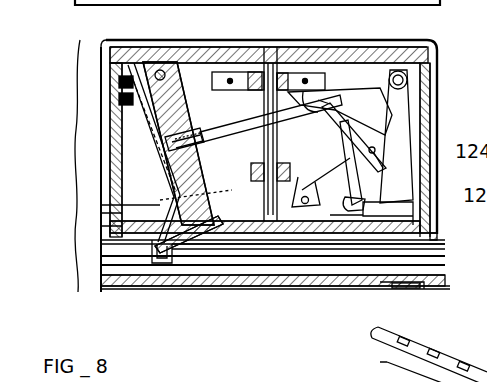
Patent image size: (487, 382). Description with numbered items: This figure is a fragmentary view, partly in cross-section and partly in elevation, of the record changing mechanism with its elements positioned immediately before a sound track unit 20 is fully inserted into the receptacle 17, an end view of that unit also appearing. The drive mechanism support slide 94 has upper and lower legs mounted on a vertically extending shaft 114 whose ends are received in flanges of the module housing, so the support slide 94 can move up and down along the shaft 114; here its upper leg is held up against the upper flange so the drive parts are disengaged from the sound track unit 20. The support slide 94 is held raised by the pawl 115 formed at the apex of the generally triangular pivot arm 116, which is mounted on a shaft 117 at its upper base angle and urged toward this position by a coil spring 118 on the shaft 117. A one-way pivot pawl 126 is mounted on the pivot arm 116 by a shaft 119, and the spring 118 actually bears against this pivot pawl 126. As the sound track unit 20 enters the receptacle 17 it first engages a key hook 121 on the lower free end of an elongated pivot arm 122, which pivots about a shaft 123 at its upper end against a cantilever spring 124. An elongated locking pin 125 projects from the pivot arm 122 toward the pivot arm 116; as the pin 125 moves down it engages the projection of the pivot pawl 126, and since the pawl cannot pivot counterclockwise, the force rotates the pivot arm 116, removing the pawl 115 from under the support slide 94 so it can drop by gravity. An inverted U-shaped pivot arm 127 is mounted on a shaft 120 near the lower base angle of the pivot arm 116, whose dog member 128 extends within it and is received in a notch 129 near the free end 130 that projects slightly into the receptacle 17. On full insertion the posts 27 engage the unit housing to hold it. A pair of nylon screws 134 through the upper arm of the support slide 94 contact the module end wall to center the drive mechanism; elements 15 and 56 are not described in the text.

The base plate 15 is at (207, 258).
The receptacle 17 is at (112, 247).
The sound track unit 20 is at (197, 257).
The posts 27 is at (410, 287).
The channel rail 56 is at (383, 335).
The drive mechanism support slide 94 is at (213, 85).
The shaft 114 is at (265, 48).
The pawl 115 is at (316, 116).
The generally triangular pivot arm 116 is at (362, 96).
The shaft 117 is at (407, 80).
The coil spring 118 is at (398, 122).
The shaft 119 is at (379, 166).
The shaft 120 is at (298, 181).
The key hook 121 is at (153, 243).
The elongated pivot arm 122 is at (101, 205).
The shaft 123 is at (110, 42).
The cantilever spring 124 is at (125, 146).
The locking pin 125 is at (236, 126).
The one-way pivot pawl 126 is at (354, 137).
The pivot arm of inverted U-shape 127 is at (332, 186).
The dog member 128 is at (345, 222).
The notch 129 is at (392, 222).
The free end 130 is at (437, 222).
The nylon screws 134 is at (245, 64).